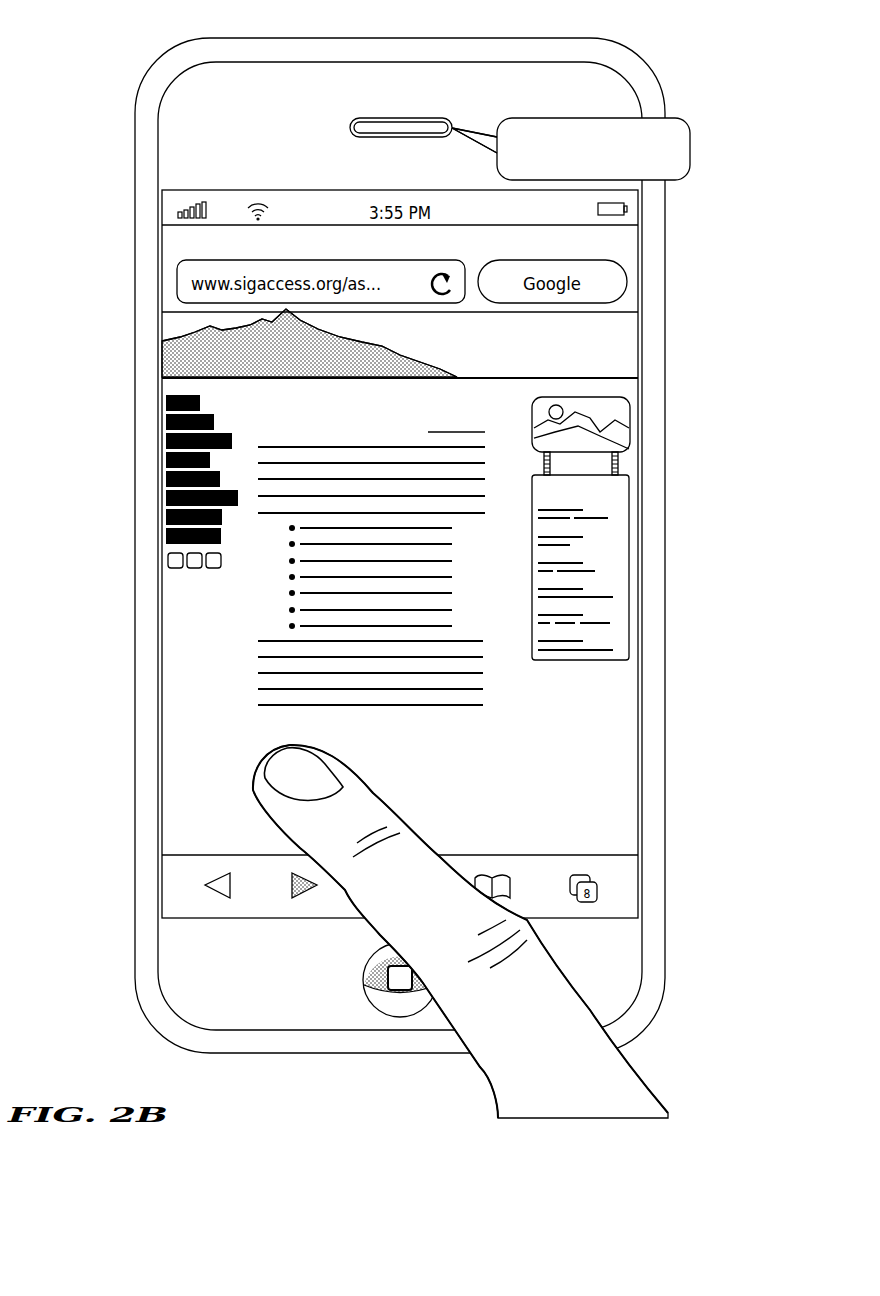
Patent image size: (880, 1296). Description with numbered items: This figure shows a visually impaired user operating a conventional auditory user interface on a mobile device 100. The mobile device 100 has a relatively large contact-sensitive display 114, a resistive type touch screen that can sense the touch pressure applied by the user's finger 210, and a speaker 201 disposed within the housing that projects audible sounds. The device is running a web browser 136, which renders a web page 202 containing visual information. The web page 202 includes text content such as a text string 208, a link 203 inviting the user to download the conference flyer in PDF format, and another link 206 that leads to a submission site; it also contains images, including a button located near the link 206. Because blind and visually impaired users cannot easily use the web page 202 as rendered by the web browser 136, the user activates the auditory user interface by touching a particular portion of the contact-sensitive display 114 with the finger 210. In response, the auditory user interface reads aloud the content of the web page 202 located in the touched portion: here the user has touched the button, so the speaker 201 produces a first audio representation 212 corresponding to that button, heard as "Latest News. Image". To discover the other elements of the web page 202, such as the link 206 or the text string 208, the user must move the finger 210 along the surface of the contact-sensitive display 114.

The mobile device 100 is at (710, 64).
The speaker 201 is at (346, 127).
The first audio representation 212 is at (683, 152).
The web browser 136 is at (172, 244).
The contact-sensitive display 114 is at (632, 386).
The web page 202 is at (391, 581).
The link 203 is at (458, 735).
The link 206 is at (543, 777).
The text string 208 is at (495, 824).
The user's finger 210 is at (296, 830).